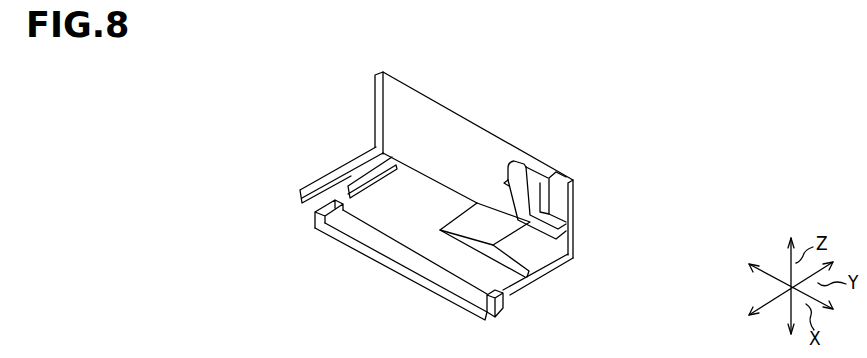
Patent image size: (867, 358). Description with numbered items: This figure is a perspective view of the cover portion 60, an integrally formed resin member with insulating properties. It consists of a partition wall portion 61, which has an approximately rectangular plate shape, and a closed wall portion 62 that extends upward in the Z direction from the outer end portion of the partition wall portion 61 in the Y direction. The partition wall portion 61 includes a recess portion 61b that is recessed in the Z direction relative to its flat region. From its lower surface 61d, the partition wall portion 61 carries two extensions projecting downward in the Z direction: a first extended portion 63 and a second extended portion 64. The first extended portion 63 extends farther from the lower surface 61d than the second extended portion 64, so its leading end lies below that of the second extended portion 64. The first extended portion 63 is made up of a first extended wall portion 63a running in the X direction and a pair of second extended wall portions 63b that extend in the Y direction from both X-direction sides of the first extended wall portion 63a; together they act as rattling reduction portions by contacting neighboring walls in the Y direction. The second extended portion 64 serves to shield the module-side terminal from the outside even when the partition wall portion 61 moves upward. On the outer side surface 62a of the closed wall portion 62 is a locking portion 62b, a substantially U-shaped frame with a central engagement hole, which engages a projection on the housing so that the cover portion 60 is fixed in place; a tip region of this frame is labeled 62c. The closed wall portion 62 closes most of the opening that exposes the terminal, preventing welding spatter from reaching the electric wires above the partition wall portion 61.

The cover portion 60 is at (236, 140).
The partition wall portion 61 is at (325, 173).
The recess portion 61b is at (533, 240).
The lower surface 61d is at (437, 200).
The closed wall portion 62 is at (375, 94).
The outer side surface 62a is at (485, 148).
The locking portion 62b is at (570, 208).
The tip of hook portion 62c is at (546, 170).
The first extended portion 63 is at (352, 246).
The first extended wall portion 63a is at (420, 284).
The second extended wall portions 63b is at (316, 213).
The second extended portion 64 is at (378, 185).